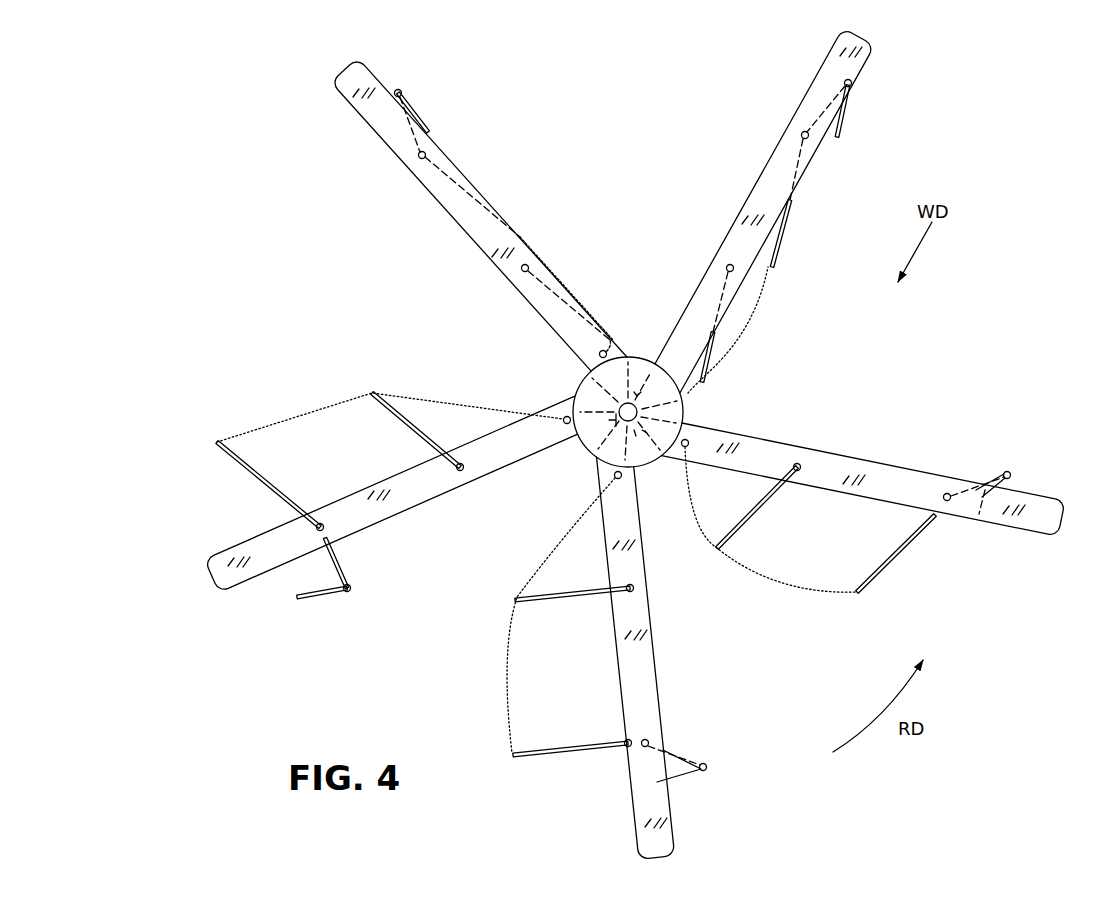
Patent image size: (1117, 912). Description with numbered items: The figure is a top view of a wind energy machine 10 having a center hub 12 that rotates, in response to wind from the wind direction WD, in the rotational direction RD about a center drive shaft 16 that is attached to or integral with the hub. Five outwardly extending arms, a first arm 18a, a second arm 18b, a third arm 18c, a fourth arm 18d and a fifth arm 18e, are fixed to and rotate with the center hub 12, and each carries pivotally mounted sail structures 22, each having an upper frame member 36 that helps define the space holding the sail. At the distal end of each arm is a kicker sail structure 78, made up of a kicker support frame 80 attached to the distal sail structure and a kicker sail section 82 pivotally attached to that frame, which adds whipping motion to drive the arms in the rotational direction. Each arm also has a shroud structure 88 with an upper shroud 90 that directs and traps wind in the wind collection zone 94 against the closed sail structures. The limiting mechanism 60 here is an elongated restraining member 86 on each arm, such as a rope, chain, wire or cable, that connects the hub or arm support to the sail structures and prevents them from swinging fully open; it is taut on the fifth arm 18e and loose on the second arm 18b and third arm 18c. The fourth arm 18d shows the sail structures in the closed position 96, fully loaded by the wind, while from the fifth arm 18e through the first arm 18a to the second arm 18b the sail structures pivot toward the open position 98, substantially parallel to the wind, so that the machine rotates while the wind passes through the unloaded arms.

The wind energy machine 10 is at (947, 320).
The center hub 12 is at (645, 360).
The center drive shaft 16 is at (619, 407).
The first arm 18a is at (617, 783).
The second arm 18b is at (1052, 547).
The third arm 18c is at (900, 103).
The fourth arm 18d is at (340, 141).
The fifth arm 18e is at (235, 622).
The sail structure 22 is at (222, 455).
The upper frame member 36 is at (877, 572).
The limiting mechanism 60 is at (321, 403).
The kicker sail structure 78 is at (343, 598).
The kicker support frame 80 is at (343, 560).
The kicker sail section 82 is at (308, 600).
The elongated restraining member 86 is at (505, 670).
The shroud structure 88 is at (893, 460).
The upper shroud 90 is at (768, 442).
The wind collection zone 94 is at (532, 218).
The closed position 96 is at (488, 155).
The open position 98 is at (957, 445).